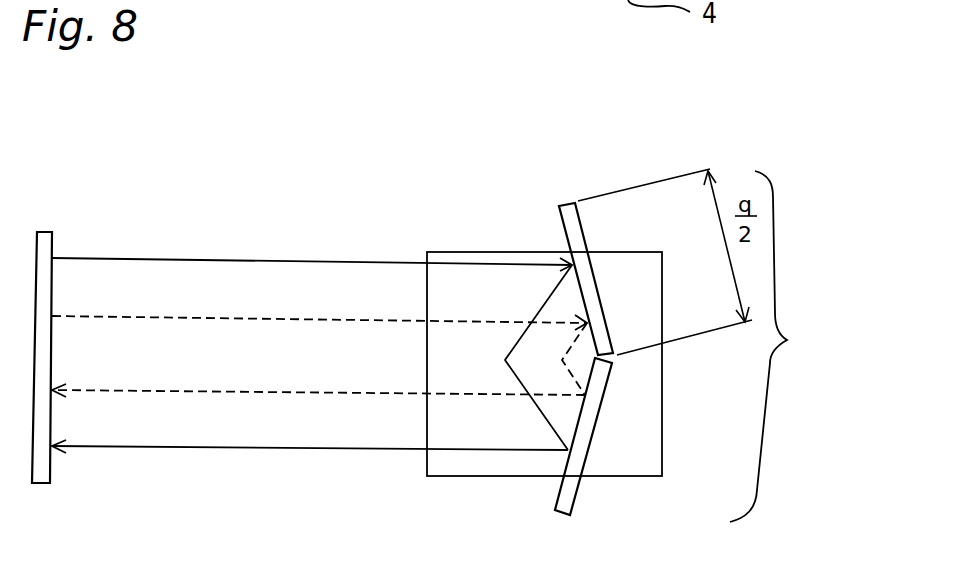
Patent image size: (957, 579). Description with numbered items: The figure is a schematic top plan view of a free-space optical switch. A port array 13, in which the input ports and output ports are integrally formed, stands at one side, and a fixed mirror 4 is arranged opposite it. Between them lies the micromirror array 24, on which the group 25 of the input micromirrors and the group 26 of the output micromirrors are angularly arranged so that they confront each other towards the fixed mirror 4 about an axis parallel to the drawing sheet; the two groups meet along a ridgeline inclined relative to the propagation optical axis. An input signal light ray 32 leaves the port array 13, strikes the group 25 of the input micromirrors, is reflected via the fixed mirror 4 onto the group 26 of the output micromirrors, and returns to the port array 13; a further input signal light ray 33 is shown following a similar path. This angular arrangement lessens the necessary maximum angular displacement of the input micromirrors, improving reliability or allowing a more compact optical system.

The fixed mirror 4 is at (610, 477).
The port array 13 is at (35, 277).
The micromirror array 24 is at (776, 346).
The group of the input micromirrors 25 is at (602, 307).
The group of the output micromirrors 26 is at (608, 387).
The input signal light ray 32 is at (90, 258).
The input signal light ray 33 is at (112, 315).